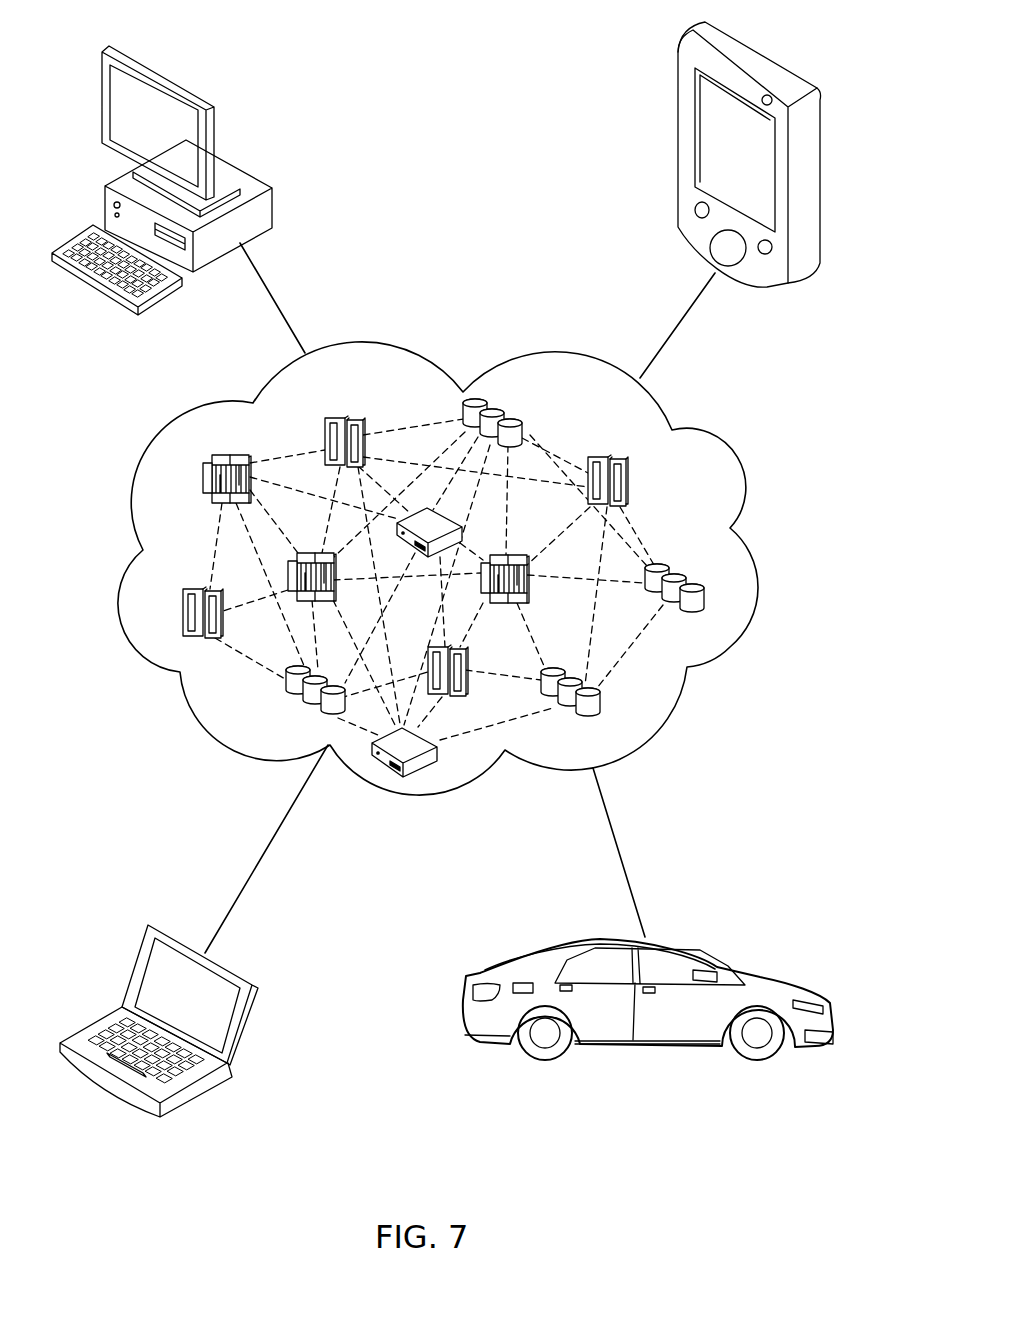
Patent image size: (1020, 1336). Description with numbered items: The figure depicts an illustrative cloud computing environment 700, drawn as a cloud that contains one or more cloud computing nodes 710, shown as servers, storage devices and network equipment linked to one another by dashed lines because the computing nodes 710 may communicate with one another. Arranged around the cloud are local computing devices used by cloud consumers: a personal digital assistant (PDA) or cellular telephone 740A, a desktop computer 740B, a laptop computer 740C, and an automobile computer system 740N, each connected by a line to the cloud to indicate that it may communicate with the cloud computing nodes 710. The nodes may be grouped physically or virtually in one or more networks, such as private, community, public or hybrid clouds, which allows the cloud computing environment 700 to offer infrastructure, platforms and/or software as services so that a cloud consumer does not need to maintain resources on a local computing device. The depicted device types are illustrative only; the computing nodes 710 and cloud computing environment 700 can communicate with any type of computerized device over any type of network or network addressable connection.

The cloud computing environment 700 is at (730, 645).
The cloud computing nodes 710 is at (672, 505).
The personal digital assistant (PDA) or cellular telephone 740A is at (677, 102).
The desktop computer 740B is at (275, 205).
The laptop computer 740C is at (257, 995).
The automobile computer system 740N is at (833, 1003).